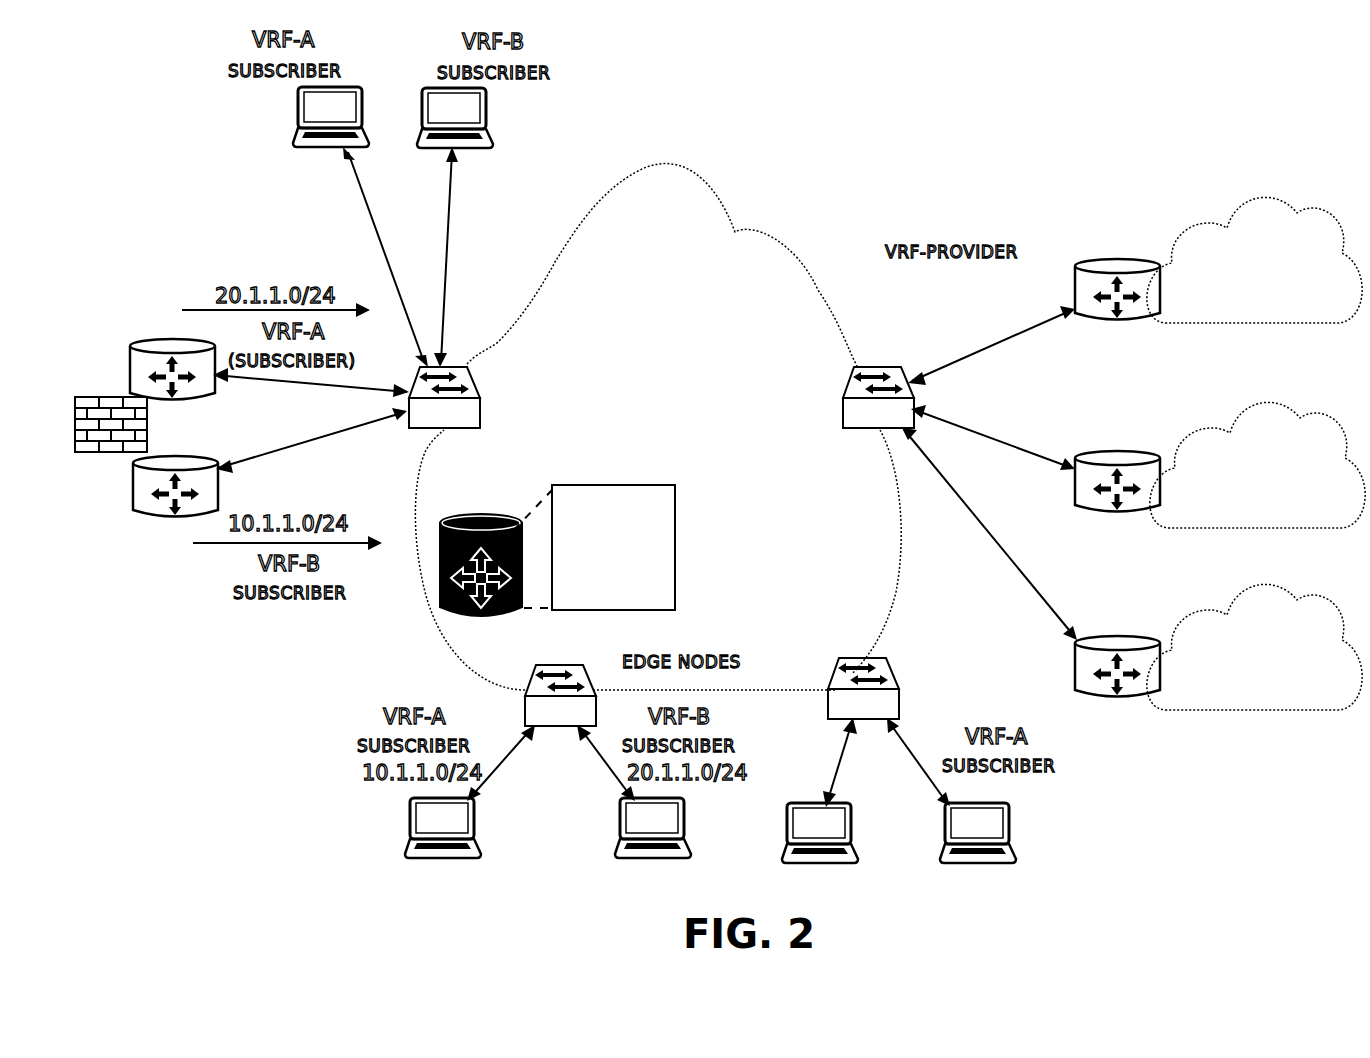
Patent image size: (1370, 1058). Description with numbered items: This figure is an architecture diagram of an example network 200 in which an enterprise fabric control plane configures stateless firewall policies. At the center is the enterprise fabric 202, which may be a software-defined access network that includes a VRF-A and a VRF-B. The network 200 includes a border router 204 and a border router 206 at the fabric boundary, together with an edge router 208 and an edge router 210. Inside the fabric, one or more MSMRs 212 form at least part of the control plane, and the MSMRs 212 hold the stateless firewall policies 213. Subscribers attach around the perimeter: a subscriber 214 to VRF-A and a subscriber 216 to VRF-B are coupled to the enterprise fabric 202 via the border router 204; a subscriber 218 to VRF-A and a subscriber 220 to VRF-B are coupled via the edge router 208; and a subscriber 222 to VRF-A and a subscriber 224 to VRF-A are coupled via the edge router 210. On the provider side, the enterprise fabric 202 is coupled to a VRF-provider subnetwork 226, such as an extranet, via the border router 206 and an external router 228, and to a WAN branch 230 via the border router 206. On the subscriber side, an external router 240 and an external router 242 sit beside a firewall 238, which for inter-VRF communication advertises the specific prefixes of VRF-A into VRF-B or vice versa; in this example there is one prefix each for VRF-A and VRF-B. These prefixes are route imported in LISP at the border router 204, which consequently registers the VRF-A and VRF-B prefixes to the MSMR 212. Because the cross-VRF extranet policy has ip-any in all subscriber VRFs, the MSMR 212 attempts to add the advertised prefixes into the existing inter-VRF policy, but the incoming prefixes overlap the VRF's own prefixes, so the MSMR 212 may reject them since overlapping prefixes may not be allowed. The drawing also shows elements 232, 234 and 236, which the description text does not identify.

The network 200 is at (1172, 82).
The enterprise fabric 202 is at (658, 427).
The border router 204 is at (491, 397).
The border router 206 is at (837, 397).
The edge router 208 is at (535, 665).
The edge router 210 is at (866, 658).
The MSMR 212 is at (440, 520).
The stateless firewall policies 213 is at (594, 547).
The subscriber to VRF-A 214 is at (350, 97).
The subscriber to VRF-B 216 is at (480, 118).
The subscriber to VRF-A 218 is at (463, 812).
The subscriber to VRF-B 220 is at (676, 812).
The subscriber to VRF-A 222 is at (835, 800).
The subscriber to VRF-A 224 is at (1000, 806).
The VRF-provider subnetwork 226 is at (1288, 195).
The external router 228 is at (1088, 258).
The WAN branch 230 is at (1298, 398).
The router 232 is at (1090, 450).
The internet 234 is at (1300, 585).
The router 236 is at (1108, 635).
The firewall 238 is at (150, 430).
The external router 240 is at (135, 340).
The external router 242 is at (172, 520).